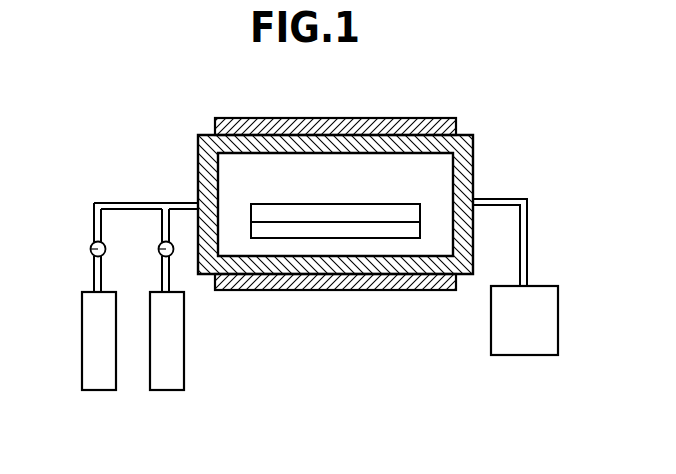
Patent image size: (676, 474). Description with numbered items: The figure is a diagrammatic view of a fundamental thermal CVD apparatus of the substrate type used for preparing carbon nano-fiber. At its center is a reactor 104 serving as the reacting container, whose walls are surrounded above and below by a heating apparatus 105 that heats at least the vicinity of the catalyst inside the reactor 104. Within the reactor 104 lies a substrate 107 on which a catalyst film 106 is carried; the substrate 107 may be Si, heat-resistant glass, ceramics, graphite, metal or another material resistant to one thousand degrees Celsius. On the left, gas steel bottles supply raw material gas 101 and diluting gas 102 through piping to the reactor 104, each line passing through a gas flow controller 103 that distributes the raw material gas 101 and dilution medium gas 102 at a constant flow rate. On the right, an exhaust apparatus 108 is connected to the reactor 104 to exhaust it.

The raw material gas 101 is at (99, 378).
The diluting gas 102 is at (168, 378).
The gas flow controller 103 is at (91, 245).
The reactor 104 is at (467, 150).
The heating apparatus 105 is at (362, 126).
The catalyst film 106 is at (360, 215).
The substrate 107 is at (296, 235).
The exhaust apparatus 108 is at (522, 337).